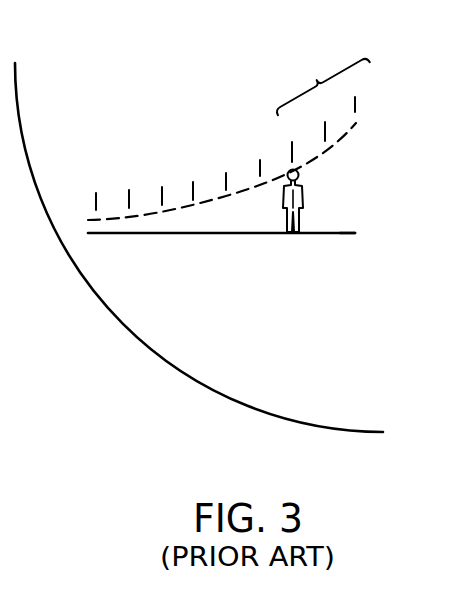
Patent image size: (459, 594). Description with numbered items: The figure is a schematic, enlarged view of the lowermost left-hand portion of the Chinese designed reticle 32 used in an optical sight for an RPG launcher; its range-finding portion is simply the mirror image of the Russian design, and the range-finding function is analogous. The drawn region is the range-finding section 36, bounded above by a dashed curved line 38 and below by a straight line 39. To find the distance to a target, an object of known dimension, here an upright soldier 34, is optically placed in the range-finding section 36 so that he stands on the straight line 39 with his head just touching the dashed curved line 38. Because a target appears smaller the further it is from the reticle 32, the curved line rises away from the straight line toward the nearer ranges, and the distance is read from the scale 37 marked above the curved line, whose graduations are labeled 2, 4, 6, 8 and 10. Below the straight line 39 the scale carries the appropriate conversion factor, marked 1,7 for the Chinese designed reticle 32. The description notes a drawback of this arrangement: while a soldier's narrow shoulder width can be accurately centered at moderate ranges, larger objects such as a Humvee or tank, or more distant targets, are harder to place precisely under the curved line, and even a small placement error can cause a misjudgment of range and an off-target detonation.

The conversion factor 1.7 marking 1 is at (354, 251).
The distance mark 2 is at (343, 103).
The distance mark 4 is at (280, 144).
The distance mark 6 is at (213, 170).
The distance mark 8 is at (148, 183).
The distance mark 10 is at (98, 185).
The Chinese designed reticle 32 is at (118, 321).
The upright soldier 34 is at (302, 198).
The range-finding section 36 is at (216, 113).
The scale 37 is at (315, 75).
The dashed curved line 38 is at (356, 123).
The straight line 39 is at (247, 236).